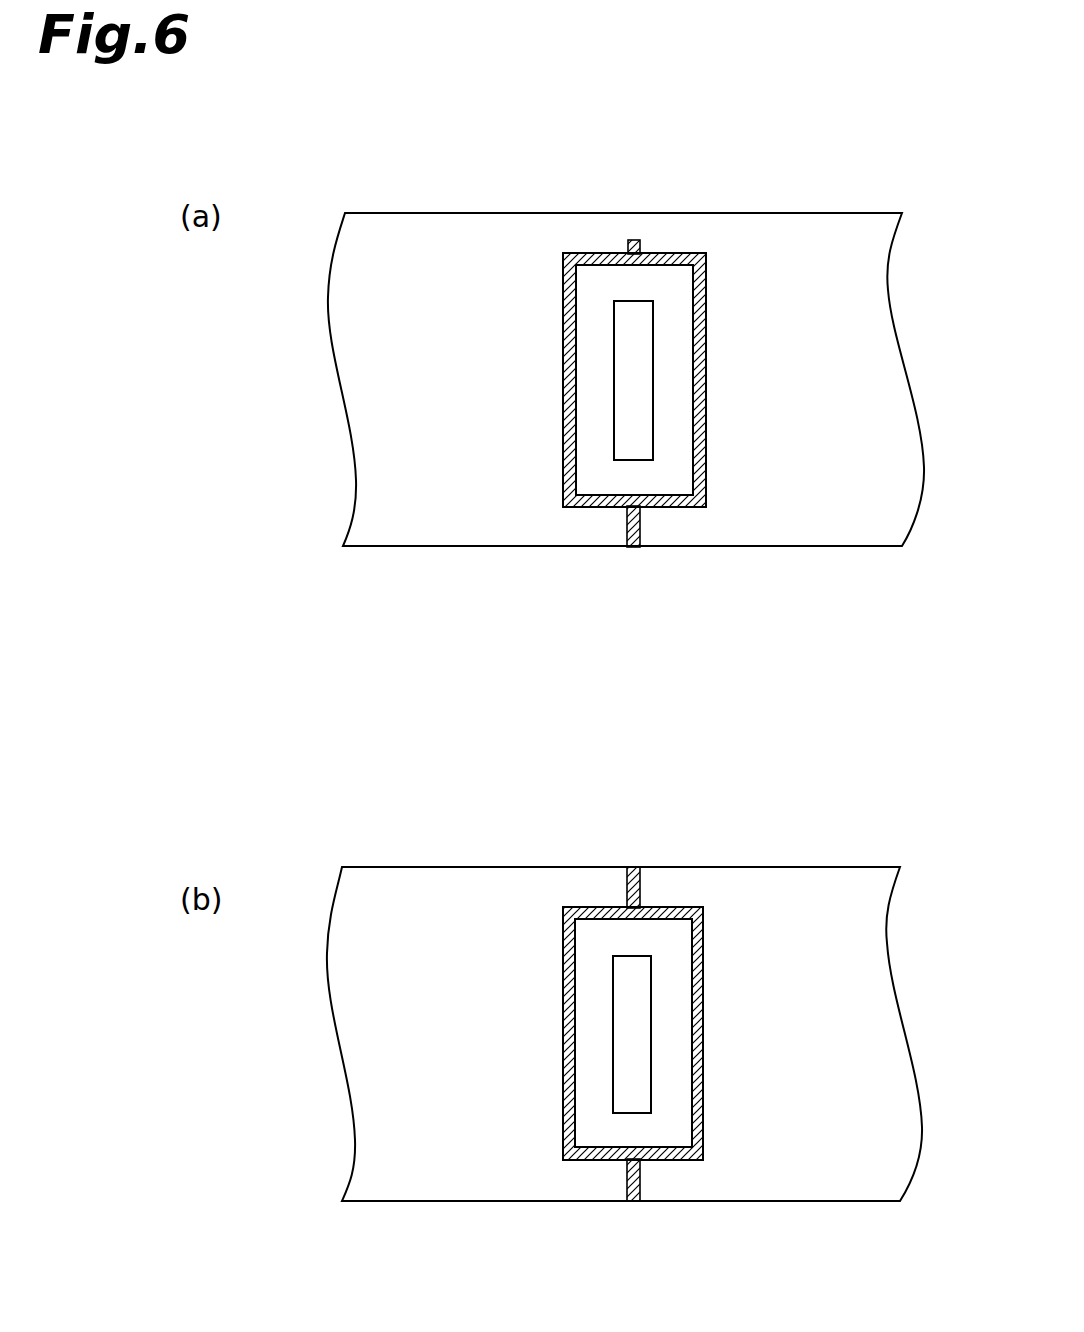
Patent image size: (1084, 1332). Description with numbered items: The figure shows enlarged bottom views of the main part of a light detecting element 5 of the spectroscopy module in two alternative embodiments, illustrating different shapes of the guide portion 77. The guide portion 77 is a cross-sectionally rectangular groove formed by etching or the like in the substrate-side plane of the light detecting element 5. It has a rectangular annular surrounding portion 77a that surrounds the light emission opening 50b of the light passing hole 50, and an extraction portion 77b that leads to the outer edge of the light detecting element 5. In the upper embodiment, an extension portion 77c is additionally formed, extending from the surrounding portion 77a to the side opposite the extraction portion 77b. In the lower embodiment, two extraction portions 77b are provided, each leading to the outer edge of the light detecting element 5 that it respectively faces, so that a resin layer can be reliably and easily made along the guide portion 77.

The light detecting element 5 is at (452, 207).
The guide portion 77 is at (637, 712).
The surrounding portion 77a is at (701, 367).
The extraction portion 77b is at (631, 530).
The extension portion 77c is at (643, 247).
The light emission opening 50b is at (621, 401).
The light passing hole 50 is at (553, 707).